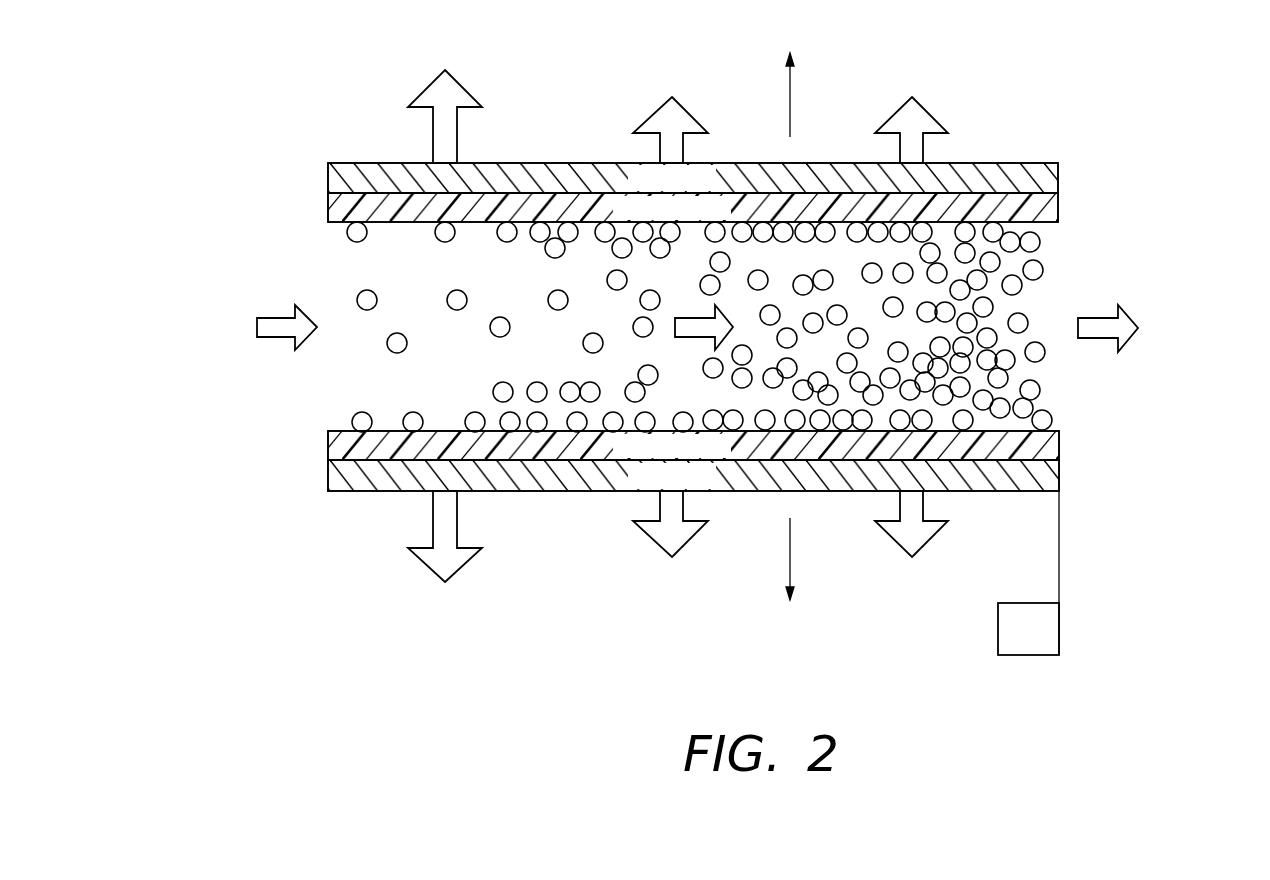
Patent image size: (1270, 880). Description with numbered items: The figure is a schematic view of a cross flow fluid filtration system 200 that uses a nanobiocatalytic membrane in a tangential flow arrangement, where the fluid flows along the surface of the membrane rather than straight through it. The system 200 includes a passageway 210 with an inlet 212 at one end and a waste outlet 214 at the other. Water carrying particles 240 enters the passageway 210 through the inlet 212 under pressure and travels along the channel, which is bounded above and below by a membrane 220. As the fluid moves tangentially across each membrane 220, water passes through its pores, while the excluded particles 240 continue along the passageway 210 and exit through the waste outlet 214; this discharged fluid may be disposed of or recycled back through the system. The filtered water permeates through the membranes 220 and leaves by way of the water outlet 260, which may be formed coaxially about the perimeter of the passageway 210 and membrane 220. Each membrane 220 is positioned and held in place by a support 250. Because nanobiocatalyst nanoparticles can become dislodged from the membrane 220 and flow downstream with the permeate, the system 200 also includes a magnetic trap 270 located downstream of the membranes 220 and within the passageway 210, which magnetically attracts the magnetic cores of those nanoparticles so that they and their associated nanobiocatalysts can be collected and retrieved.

The cross flow fluid filtration system 200 is at (250, 107).
The passageway 210 is at (398, 222).
The inlet 212 is at (263, 338).
The waste outlet 214 is at (1128, 320).
The membrane 220 is at (1058, 215).
The particles 240 is at (493, 333).
The support 250 is at (1058, 178).
The water outlet 260 is at (790, 97).
The magnetic trap 270 is at (1030, 655).